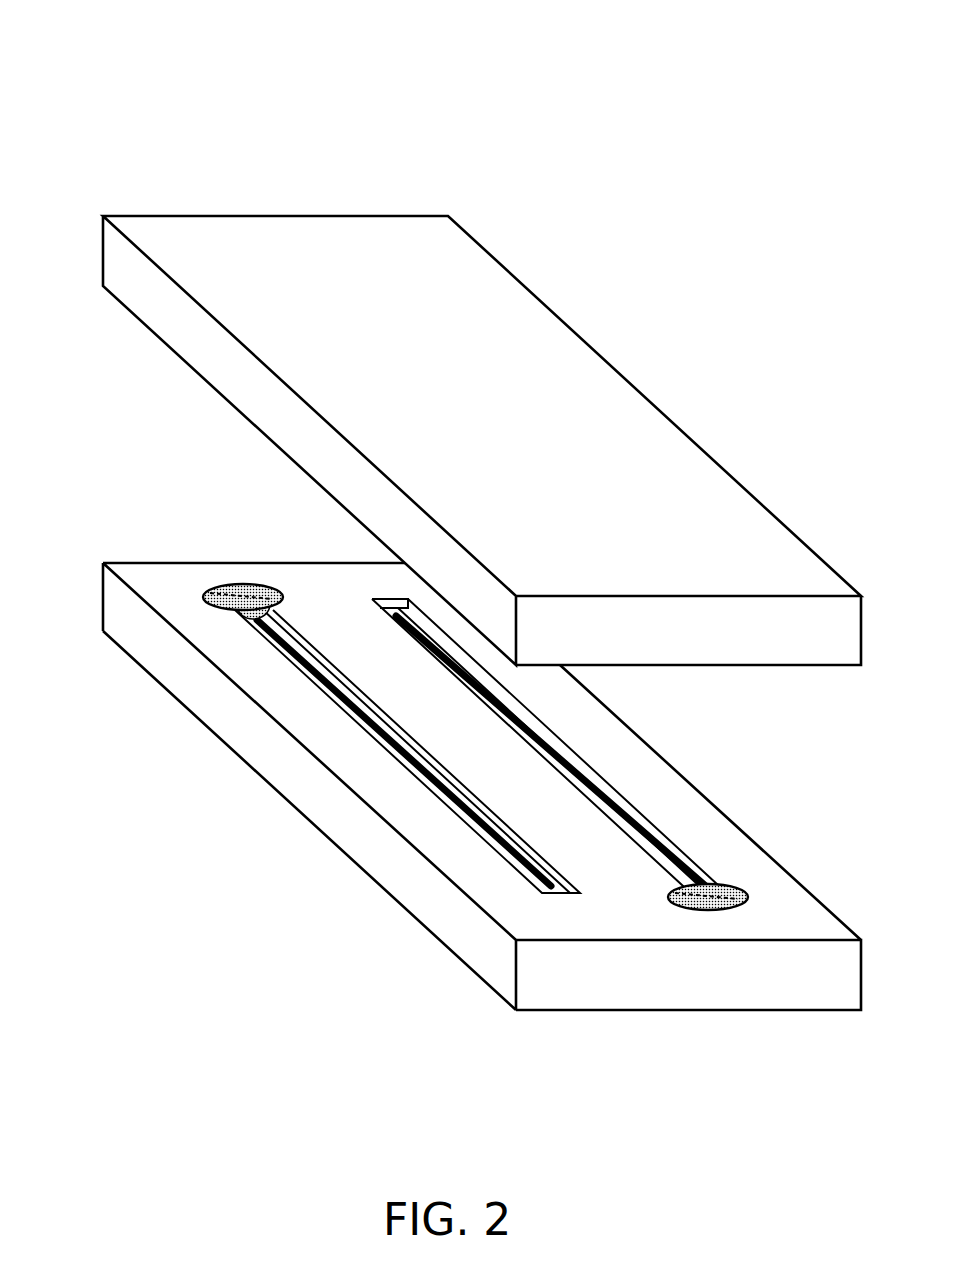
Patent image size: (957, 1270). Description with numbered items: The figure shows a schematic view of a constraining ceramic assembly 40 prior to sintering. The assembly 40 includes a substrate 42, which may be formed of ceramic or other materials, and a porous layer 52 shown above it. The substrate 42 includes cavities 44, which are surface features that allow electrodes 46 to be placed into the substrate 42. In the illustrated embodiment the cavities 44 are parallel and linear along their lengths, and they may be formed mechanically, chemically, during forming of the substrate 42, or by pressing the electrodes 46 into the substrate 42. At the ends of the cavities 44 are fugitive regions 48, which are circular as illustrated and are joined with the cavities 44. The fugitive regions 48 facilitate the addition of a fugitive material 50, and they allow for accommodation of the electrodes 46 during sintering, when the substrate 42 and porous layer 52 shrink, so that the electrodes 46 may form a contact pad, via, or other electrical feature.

The constraining ceramic assembly 40 is at (148, 58).
The substrate 42 is at (327, 838).
The cavities 44 is at (447, 710).
The electrodes 46 is at (508, 827).
The fugitive regions 48 is at (202, 591).
The fugitive material 50 is at (283, 597).
The porous layer 52 is at (533, 292).